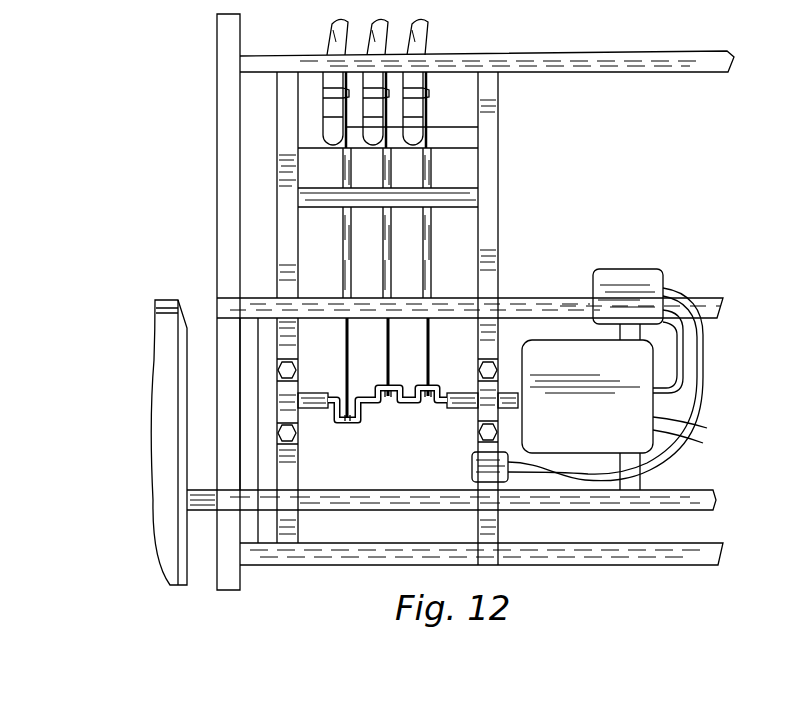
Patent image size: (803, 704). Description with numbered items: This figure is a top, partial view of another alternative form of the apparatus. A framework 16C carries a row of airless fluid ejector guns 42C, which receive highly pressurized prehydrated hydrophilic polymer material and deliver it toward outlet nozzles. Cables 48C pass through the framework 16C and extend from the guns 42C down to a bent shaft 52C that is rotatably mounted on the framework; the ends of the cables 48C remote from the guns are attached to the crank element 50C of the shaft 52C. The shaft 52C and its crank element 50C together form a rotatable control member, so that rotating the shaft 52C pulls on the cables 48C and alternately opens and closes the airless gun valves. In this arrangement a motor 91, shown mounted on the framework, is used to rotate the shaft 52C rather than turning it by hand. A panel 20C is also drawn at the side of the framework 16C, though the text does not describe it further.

The framework 16C is at (603, 52).
The airless fluid ejector guns 42C is at (382, 120).
The cables 48C is at (350, 340).
The crank element 50C is at (356, 426).
The shaft 52C is at (372, 405).
The panel 20C is at (155, 357).
The motor 91 is at (587, 415).